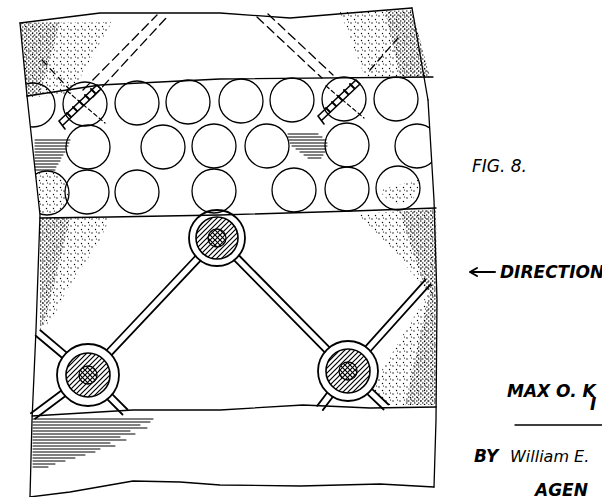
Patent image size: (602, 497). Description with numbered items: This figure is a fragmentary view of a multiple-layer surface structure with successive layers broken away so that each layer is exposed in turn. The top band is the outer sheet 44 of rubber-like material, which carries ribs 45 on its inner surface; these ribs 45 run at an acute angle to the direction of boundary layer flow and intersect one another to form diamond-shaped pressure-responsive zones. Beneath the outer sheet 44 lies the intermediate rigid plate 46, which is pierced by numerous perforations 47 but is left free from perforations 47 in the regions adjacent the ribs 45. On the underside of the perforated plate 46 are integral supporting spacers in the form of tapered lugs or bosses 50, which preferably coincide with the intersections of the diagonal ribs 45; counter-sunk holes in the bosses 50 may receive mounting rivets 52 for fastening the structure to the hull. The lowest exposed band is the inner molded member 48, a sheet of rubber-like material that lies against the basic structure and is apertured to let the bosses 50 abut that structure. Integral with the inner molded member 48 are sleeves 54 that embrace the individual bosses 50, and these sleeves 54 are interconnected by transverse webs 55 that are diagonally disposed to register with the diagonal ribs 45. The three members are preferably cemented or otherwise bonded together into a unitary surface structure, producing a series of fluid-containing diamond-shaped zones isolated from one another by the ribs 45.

The outer sheet 44 is at (225, 54).
The ribs 45 is at (80, 90).
The intermediate rigid plate 46 is at (392, 128).
The perforations 47 is at (70, 194).
The inner molded member 48 is at (230, 416).
The bosses 50 is at (217, 263).
The mounting rivets 52 is at (190, 242).
The sleeves 54 is at (246, 239).
The transverse webs 55 is at (52, 336).